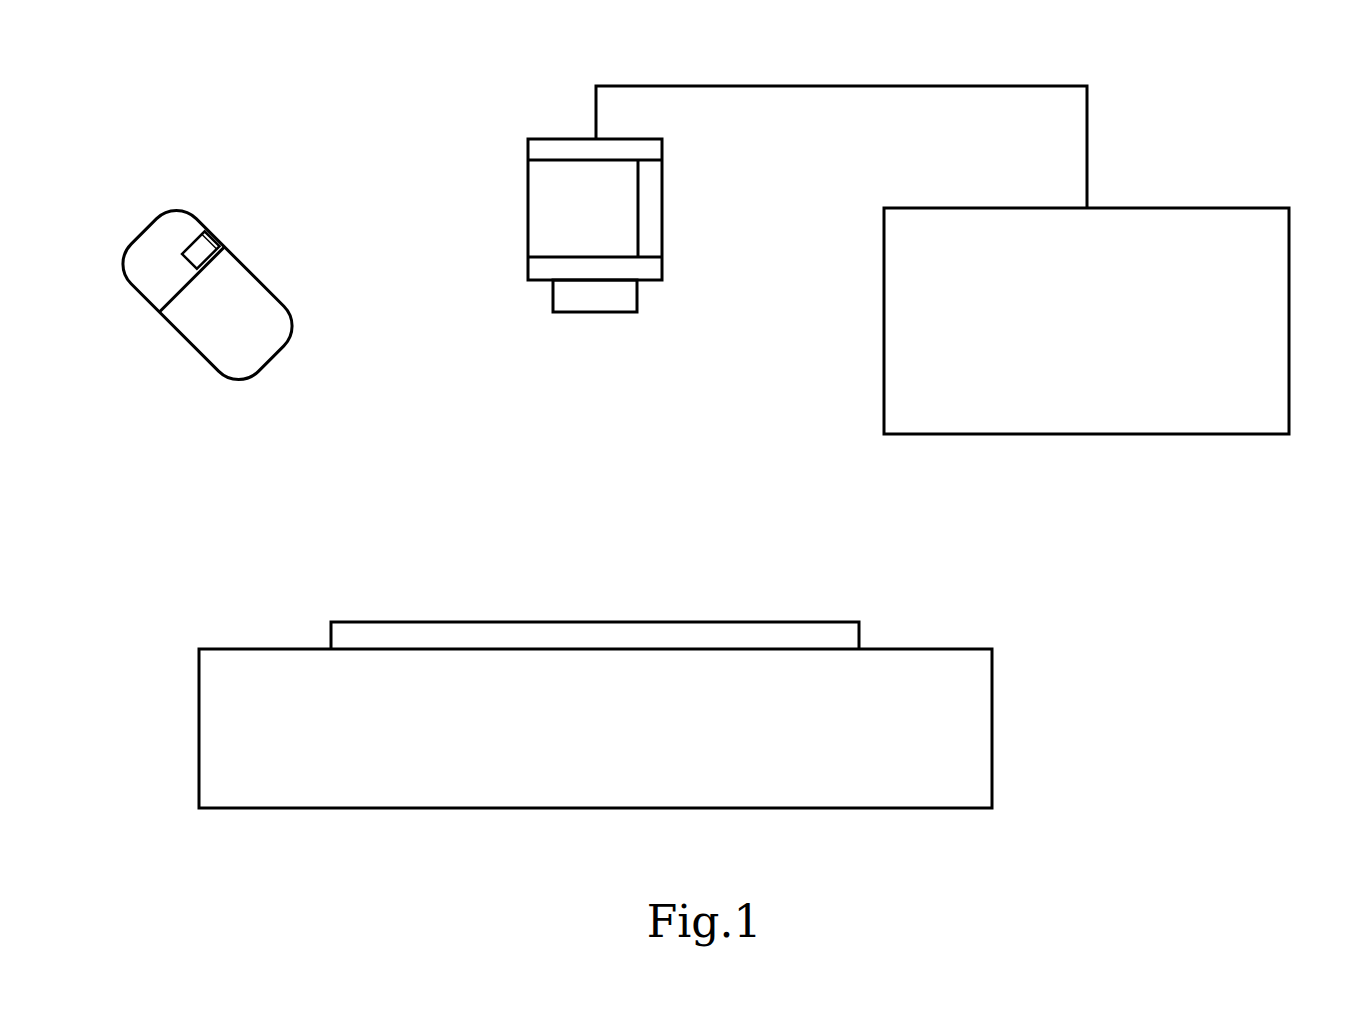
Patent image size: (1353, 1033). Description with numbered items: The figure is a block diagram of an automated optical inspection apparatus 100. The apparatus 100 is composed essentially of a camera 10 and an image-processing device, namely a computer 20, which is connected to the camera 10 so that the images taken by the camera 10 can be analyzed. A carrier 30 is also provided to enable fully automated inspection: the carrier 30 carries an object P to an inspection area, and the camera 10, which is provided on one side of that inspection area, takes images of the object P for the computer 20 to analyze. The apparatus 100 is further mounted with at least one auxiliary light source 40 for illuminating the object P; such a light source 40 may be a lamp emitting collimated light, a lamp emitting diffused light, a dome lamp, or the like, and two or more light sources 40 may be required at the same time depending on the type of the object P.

The automated optical inspection apparatus 100 is at (1343, 54).
The camera 10 is at (527, 208).
The computer 20 is at (1161, 207).
The carrier 30 is at (993, 724).
The auxiliary light source 40 is at (256, 275).
The object P is at (597, 621).